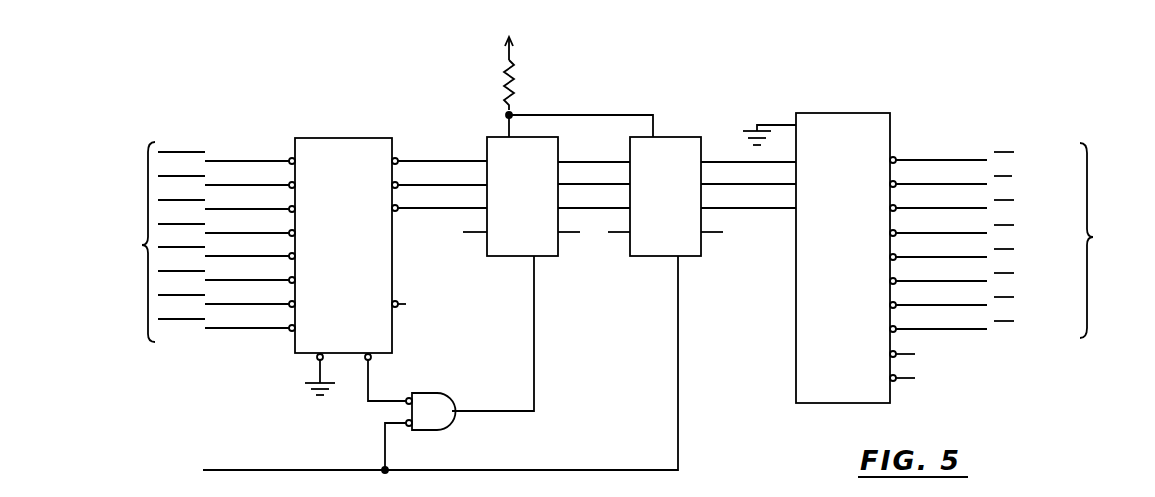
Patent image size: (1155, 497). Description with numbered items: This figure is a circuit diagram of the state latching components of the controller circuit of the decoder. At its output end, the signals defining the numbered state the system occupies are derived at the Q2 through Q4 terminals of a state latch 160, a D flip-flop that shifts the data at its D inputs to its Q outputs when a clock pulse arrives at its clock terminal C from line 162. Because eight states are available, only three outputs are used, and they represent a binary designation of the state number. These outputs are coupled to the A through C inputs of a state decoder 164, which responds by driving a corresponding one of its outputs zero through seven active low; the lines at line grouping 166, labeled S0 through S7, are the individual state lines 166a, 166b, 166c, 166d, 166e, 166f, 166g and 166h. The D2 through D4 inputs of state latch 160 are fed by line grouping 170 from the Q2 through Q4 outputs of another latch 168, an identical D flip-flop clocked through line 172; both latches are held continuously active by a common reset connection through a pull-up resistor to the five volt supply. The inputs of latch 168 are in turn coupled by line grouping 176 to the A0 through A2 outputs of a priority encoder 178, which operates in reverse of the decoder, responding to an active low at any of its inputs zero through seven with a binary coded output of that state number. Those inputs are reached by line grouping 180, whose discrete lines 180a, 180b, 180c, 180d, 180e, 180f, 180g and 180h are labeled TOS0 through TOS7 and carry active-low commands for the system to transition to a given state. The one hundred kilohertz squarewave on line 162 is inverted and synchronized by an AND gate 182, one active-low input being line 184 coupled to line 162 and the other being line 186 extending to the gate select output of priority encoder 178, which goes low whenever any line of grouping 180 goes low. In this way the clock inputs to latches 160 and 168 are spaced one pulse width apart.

The state latch 160 is at (694, 137).
The clock line 162 is at (682, 318).
The state decoder 164 is at (862, 113).
The line grouping 166 is at (973, 134).
The state line S0 166a is at (921, 149).
The state line S1 166b is at (921, 173).
The state line S2 166c is at (921, 197).
The state line S3 166d is at (921, 222).
The state line S4 166e is at (921, 246).
The state line S5 166f is at (921, 270).
The state line S6 166g is at (921, 294).
The state line S7 166h is at (921, 318).
The latch 168 is at (497, 137).
The line grouping 170 is at (594, 242).
The clock line 172 is at (536, 353).
The line grouping 176 is at (439, 234).
The priority encoder 178 is at (357, 138).
The line grouping 180 is at (252, 341).
The transition line TOS0 180a is at (226, 153).
The transition line TOS1 180b is at (226, 177).
The transition line TOS2 180c is at (226, 201).
The transition line TOS3 180d is at (226, 225).
The transition line TOS4 180e is at (226, 248).
The transition line TOS5 180f is at (226, 272).
The transition line TOS6 180g is at (226, 296).
The transition line TOS7 180h is at (226, 320).
The AND gate 182 is at (454, 400).
The input line 184 is at (386, 448).
The input line 186 is at (393, 399).